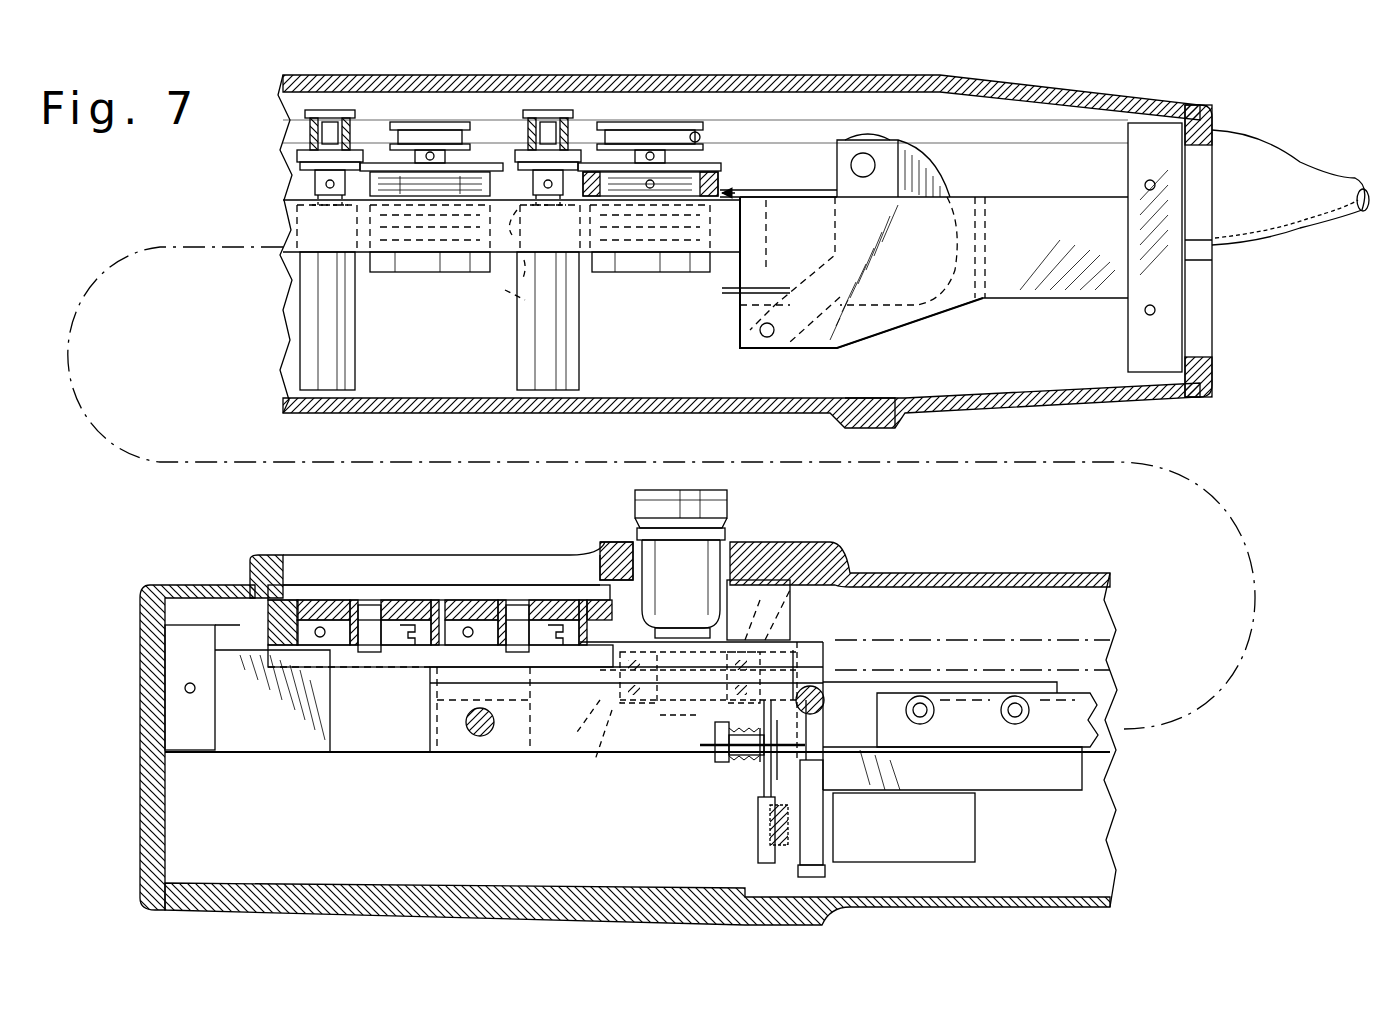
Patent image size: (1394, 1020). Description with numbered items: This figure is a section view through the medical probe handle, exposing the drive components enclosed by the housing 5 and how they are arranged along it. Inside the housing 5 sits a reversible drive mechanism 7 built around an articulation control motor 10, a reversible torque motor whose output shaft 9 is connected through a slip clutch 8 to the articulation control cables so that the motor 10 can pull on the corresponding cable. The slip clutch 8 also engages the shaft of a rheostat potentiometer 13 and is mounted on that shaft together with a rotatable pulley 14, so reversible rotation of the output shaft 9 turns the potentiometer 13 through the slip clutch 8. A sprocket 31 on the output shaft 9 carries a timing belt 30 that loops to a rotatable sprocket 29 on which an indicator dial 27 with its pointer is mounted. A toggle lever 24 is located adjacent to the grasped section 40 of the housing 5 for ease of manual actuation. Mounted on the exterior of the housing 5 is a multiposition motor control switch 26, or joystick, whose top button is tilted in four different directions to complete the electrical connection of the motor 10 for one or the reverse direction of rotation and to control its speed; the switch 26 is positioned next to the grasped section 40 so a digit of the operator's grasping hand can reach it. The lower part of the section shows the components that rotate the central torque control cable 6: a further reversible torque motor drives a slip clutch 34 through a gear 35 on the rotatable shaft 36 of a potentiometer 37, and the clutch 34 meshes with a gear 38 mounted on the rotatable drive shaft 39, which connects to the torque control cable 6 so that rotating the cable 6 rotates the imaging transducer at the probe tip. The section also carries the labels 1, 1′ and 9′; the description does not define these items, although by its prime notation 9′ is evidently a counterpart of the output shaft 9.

The sensor unit 1 is at (553, 92).
The second sensor unit 1′ is at (782, 160).
The housing 5 is at (283, 78).
The torque control cable 6 is at (612, 760).
The reversible drive mechanism 7 is at (286, 280).
The slip clutch 8 is at (300, 160).
The output shaft 9 is at (283, 205).
The guide bed 9′ is at (506, 260).
The articulation control motor 10 is at (330, 393).
The rheostat potentiometer 13 is at (402, 268).
The rotatable pulley 14 is at (405, 125).
The toggle lever 24 is at (872, 135).
The motor control switch 26 is at (720, 490).
The indicator dial 27 is at (400, 600).
The rotatable sprocket 29 is at (332, 628).
The timing belt 30 is at (310, 632).
The sprocket 31 is at (335, 140).
The slip clutch 34 is at (762, 780).
The gear 35 is at (765, 820).
The rotatable shaft 36 is at (790, 845).
The potentiometer 37 is at (900, 838).
The gear 38 is at (832, 550).
The drive shaft 39 is at (672, 752).
The grasped section 40 is at (935, 573).